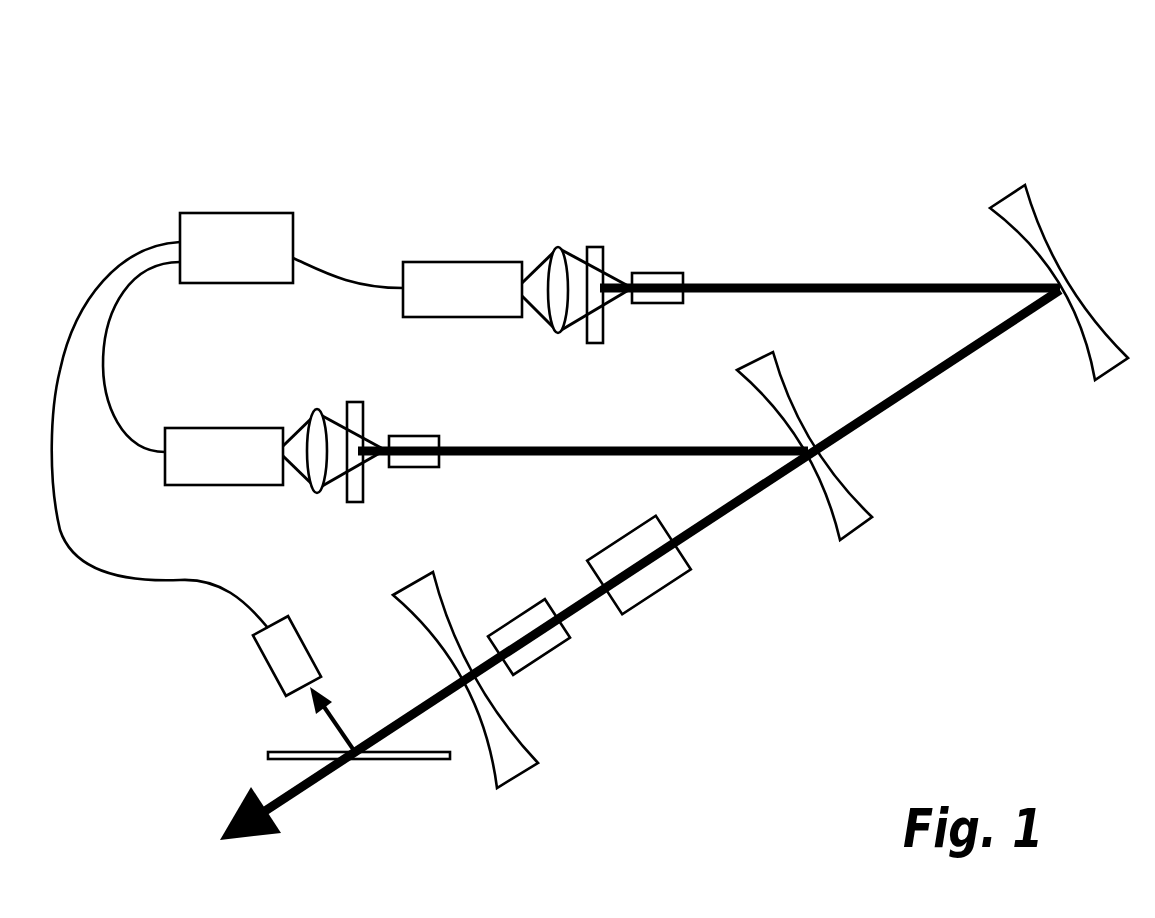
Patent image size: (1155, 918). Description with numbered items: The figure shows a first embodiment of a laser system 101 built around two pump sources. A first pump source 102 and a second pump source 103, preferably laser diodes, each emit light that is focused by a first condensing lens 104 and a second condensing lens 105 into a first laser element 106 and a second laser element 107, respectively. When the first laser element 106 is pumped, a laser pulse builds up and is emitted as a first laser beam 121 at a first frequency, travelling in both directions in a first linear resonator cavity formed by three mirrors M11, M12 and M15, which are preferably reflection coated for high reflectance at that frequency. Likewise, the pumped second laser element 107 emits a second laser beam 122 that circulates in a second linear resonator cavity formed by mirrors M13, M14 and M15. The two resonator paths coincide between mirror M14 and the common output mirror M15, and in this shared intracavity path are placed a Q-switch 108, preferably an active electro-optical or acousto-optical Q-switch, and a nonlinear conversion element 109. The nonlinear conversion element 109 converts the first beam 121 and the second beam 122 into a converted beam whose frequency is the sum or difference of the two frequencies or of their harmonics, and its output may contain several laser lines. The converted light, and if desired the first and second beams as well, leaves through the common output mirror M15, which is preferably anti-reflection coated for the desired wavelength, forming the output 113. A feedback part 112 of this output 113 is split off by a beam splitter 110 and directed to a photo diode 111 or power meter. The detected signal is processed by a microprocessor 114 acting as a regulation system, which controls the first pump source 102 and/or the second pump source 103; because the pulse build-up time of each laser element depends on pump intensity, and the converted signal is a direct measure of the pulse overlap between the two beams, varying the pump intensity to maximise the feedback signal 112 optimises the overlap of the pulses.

The laser system 101 is at (706, 82).
The first pump source 102 is at (475, 272).
The second pump source 103 is at (232, 440).
The first condensing lens 104 is at (552, 248).
The second condensing lens 105 is at (315, 410).
The first laser element 106 is at (687, 273).
The second laser element 107 is at (442, 436).
The Q-switch 108 is at (662, 577).
The nonlinear conversion element 109 is at (562, 630).
The beam splitter 110 is at (297, 757).
The photo diode 111 is at (297, 647).
The feedback part 112 is at (345, 727).
The output 113 is at (313, 788).
The microprocessor 114 is at (248, 222).
The first laser beam 121 is at (808, 284).
The second laser beam 122 is at (577, 448).
The mirror M11 is at (597, 254).
The mirror M12 is at (1042, 229).
The mirror M13 is at (358, 410).
The mirror M14 is at (845, 485).
The common output mirror M15 is at (512, 760).